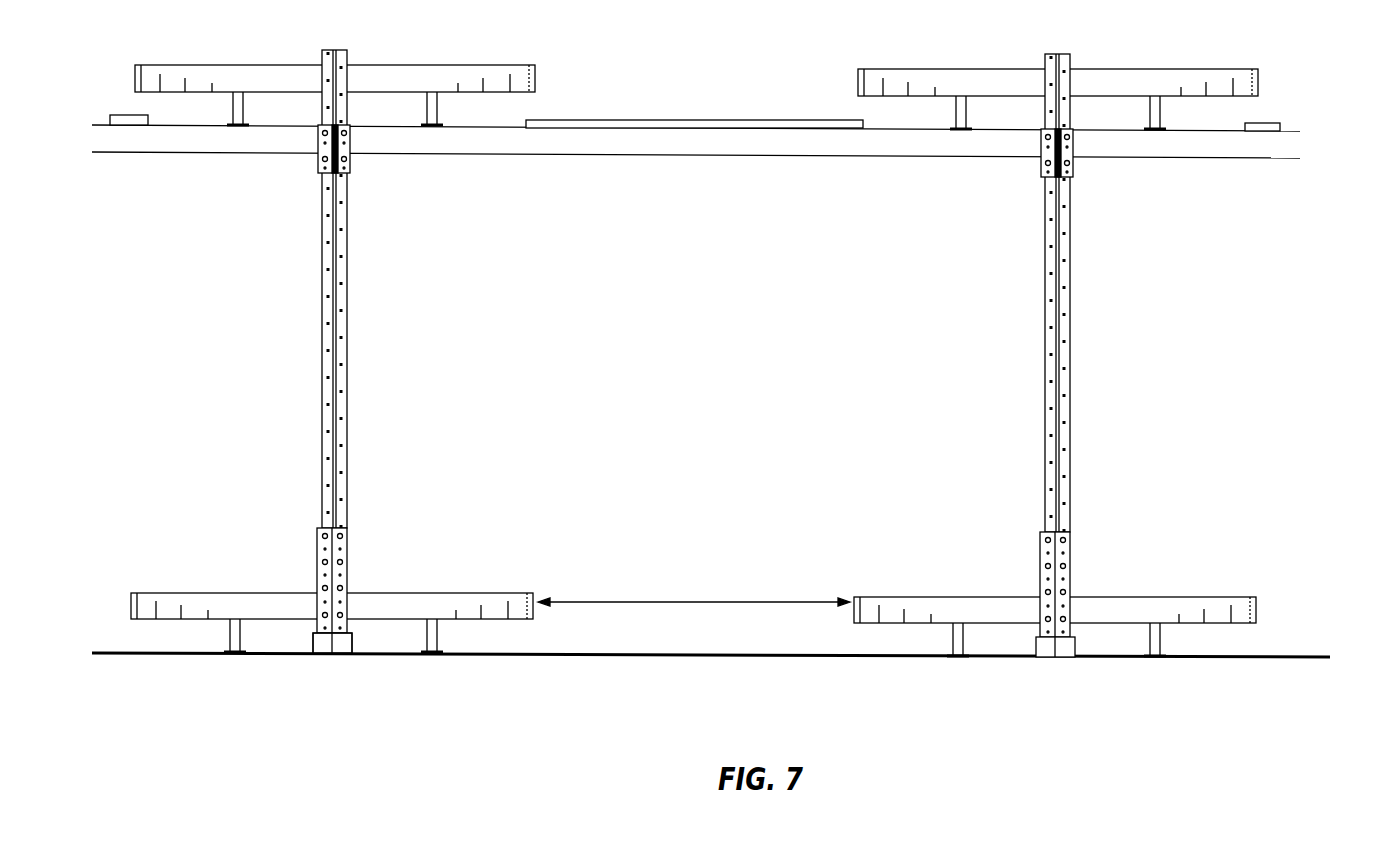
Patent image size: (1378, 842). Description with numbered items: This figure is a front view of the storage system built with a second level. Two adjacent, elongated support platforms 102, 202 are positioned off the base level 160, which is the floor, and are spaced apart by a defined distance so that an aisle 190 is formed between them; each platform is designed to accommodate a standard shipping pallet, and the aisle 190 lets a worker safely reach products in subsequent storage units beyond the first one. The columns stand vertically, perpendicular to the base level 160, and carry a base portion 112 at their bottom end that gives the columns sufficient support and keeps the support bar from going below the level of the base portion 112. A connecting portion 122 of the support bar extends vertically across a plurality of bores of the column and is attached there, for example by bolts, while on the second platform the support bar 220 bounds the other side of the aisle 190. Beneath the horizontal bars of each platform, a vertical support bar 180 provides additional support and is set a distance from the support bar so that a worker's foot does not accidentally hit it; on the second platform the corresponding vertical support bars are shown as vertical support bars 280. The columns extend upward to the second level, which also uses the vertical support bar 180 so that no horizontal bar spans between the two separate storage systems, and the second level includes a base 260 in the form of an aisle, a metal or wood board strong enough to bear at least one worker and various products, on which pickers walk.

The support platform 102 is at (492, 633).
The base portion 112 is at (343, 643).
The connecting portion 122 is at (343, 553).
The base level 160 is at (747, 655).
The vertical support bar 180 is at (238, 647).
The aisle 190 is at (694, 592).
The support platform 202 is at (895, 635).
The support bar 220 is at (907, 595).
The base 260 is at (128, 115).
The shelf support feet of second rack 280 is at (962, 638).